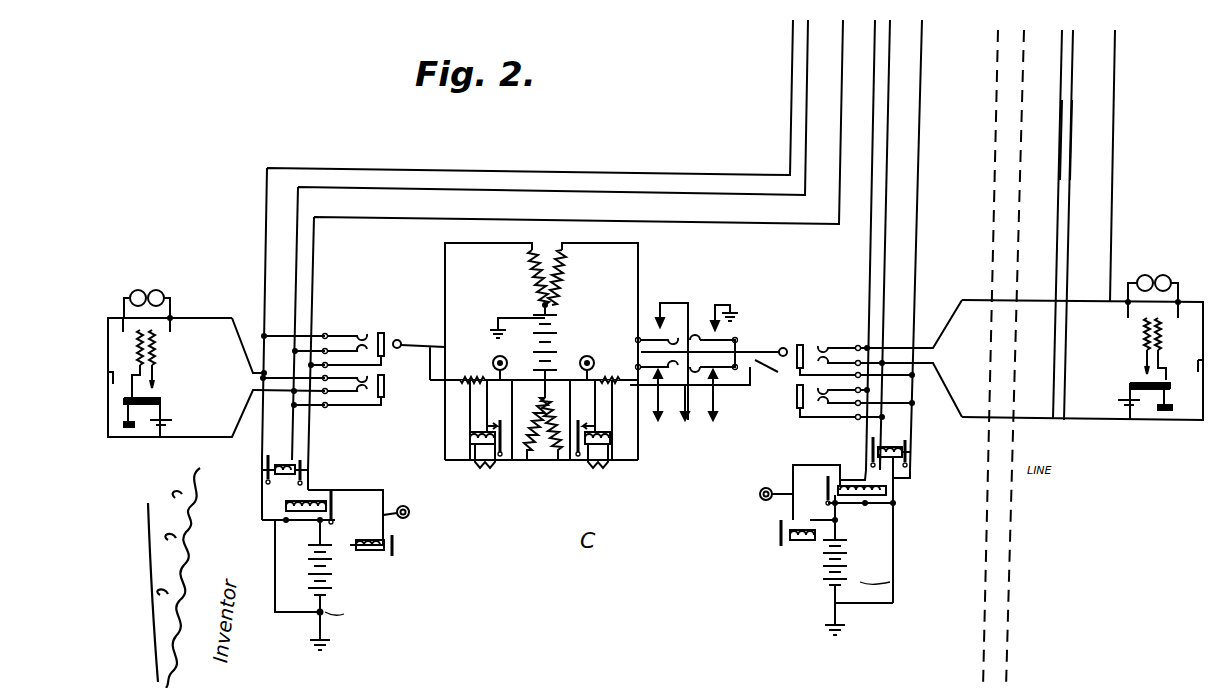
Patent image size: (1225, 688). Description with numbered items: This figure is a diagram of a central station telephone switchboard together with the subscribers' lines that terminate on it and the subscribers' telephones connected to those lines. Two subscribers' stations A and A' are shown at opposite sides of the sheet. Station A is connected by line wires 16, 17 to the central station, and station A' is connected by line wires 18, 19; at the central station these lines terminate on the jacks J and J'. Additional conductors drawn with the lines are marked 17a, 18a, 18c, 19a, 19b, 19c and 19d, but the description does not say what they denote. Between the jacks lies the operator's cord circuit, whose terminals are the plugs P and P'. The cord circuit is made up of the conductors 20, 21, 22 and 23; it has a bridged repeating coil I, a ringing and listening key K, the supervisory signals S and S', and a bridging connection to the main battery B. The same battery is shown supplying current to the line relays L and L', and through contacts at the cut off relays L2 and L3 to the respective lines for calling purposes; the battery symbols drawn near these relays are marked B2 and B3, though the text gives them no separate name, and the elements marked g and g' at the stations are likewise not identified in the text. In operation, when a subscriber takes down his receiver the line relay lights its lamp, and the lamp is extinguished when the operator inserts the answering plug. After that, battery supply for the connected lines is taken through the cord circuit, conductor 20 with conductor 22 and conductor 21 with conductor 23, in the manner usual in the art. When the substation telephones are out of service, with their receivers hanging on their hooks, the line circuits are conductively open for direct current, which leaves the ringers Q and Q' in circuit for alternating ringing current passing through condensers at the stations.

The line wire 16 is at (210, 318).
The line wire 17 is at (212, 455).
The third conductor 17a is at (314, 270).
The line wire 18 is at (1031, 300).
The conductor 18a is at (918, 297).
The conductor 18c is at (1113, 110).
The line wire 19 is at (1068, 165).
The conductor 19a is at (868, 256).
The conductor 19b is at (882, 276).
The conductor 19c is at (1088, 144).
The conductor 19d is at (1083, 140).
The cord circuit conductor 20 is at (493, 247).
The cord circuit conductor 21 is at (606, 243).
The cord circuit conductor 22 is at (498, 432).
The cord circuit conductor 23 is at (587, 432).
The subscriber's station A is at (216, 349).
The subscriber's station A' is at (1147, 332).
The ringer Q is at (147, 289).
The ringer Q' is at (1153, 273).
The receiver g is at (115, 368).
The receiver g' is at (1197, 356).
The jack J is at (322, 355).
The jack J' is at (879, 360).
The plug P is at (419, 348).
The plug P' is at (714, 344).
The repeating coil I is at (558, 277).
The main battery B is at (541, 350).
The battery B2 is at (320, 585).
The battery B3 is at (839, 587).
The supervisory signal S is at (488, 363).
The supervisory signal S' is at (599, 363).
The ringing and listening key K is at (696, 380).
The line relay L is at (335, 523).
The line relay L' is at (827, 505).
The cut off relay L2 is at (304, 468).
The cut off relay L3 is at (871, 518).